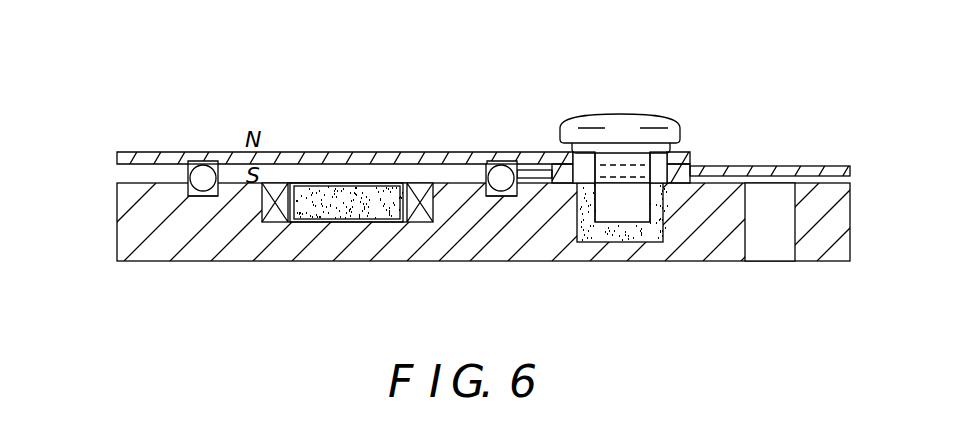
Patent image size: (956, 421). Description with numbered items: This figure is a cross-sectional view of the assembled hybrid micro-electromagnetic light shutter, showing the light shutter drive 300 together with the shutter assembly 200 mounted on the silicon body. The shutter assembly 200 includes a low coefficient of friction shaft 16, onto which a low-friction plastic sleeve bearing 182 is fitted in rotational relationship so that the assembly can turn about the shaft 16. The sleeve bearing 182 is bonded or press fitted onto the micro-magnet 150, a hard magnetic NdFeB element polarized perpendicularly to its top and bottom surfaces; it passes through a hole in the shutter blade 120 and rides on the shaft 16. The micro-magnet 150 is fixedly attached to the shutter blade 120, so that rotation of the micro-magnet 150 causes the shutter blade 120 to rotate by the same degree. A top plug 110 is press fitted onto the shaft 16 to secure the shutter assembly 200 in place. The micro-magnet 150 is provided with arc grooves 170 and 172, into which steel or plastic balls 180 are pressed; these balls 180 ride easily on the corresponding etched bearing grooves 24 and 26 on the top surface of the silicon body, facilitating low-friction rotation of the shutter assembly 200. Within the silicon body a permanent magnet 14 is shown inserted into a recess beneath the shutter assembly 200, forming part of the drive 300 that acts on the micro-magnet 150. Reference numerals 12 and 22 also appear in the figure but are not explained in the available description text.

The micro-electromagnetic light shutter assembly 200 is at (262, 76).
The light shutter drive 300 is at (262, 76).
The arc groove 170 is at (192, 152).
The micro-magnet 150 is at (298, 152).
The balls 180 is at (203, 177).
The arc groove 172 is at (503, 163).
The sleeve bearing 182 is at (581, 183).
The top plug 110 is at (630, 126).
The shutter blade 120 is at (788, 166).
The bearing groove 24 is at (190, 196).
The coil 12 is at (277, 222).
The permanent magnet 14 is at (340, 215).
The bearing groove 26 is at (510, 197).
The shaft 16 is at (620, 212).
The base section 22 is at (768, 237).